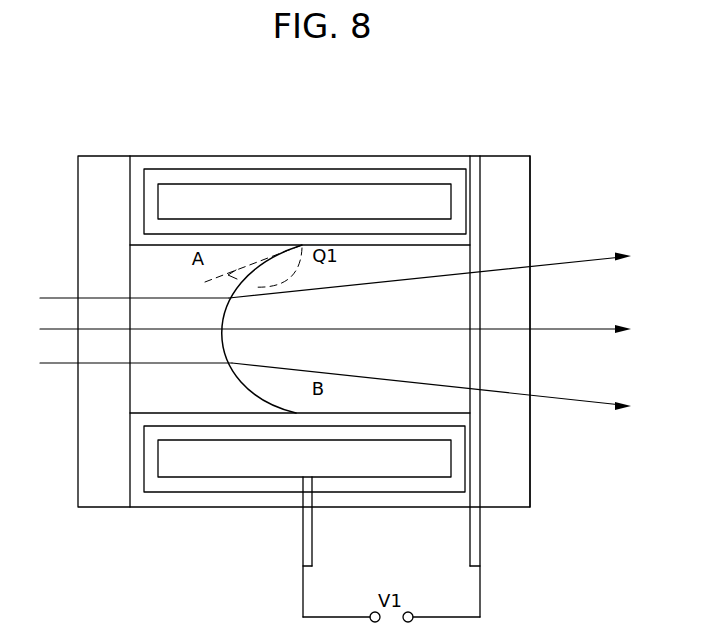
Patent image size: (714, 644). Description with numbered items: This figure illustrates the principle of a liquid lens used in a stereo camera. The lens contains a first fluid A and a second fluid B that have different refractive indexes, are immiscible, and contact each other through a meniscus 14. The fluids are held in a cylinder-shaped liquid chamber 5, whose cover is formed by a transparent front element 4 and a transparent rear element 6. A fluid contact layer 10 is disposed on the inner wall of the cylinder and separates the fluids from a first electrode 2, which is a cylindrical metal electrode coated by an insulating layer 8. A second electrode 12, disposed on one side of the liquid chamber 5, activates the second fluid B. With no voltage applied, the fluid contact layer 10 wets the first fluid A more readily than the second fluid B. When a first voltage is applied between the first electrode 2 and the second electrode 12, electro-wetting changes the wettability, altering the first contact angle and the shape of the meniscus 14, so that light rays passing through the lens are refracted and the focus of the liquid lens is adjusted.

The first electrode 2 is at (352, 200).
The transparent front element 4 is at (104, 170).
The liquid chamber 5 is at (460, 262).
The transparent rear element 6 is at (500, 170).
The insulating layer 8 is at (205, 225).
The fluid contact layer 10 is at (262, 238).
The second electrode 12 is at (478, 427).
The meniscus 14 is at (230, 372).